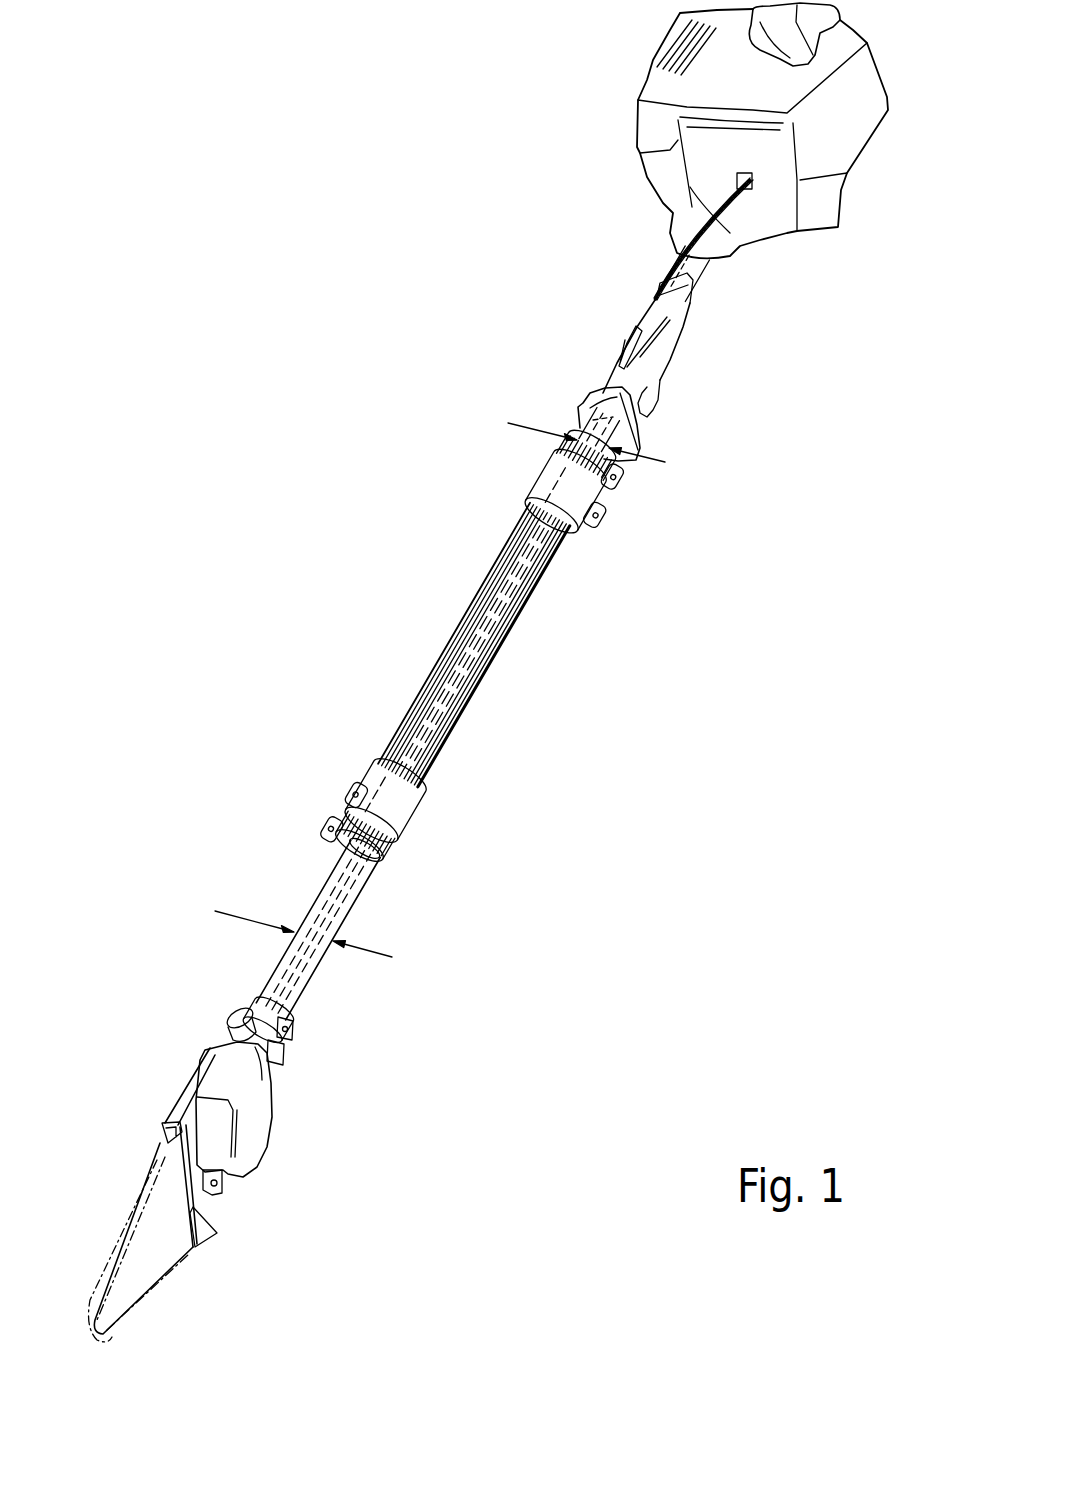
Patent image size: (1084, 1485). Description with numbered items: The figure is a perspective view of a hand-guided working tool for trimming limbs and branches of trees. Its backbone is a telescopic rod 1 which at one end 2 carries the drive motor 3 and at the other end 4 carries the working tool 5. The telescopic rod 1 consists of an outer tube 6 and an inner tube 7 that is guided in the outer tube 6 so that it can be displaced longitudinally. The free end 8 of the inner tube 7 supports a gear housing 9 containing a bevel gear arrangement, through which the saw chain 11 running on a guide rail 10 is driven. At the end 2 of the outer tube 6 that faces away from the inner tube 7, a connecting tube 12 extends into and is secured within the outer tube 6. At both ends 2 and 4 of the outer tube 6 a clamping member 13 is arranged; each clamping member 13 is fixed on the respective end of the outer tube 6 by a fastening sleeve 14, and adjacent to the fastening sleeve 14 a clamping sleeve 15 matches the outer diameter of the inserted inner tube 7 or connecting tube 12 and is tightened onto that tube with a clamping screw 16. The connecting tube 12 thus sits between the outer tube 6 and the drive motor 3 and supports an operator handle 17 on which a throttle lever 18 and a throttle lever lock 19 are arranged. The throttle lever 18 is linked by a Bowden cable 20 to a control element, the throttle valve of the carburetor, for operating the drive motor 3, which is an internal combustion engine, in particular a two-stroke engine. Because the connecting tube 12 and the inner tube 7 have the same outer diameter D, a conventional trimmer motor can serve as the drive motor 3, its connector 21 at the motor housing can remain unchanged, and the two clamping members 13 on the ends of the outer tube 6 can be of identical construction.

The telescopic rod 1 is at (360, 615).
The end of the telescopic rod 2 is at (492, 424).
The drive motor 3 is at (635, 110).
The end of the telescopic rod 4 is at (330, 808).
The working tool 5 is at (155, 1140).
The outer tube 6 is at (523, 604).
The inner tube 7 is at (327, 947).
The free end of the inner tube 8 is at (262, 1000).
The gear housing 9 is at (278, 1052).
The guide rail 10 is at (145, 1268).
The saw chain 11 is at (113, 1247).
The connecting tube 12 is at (587, 395).
The clamping member 13 is at (603, 530).
The fastening sleeve 14 is at (545, 480).
The clamping sleeve 15 is at (567, 447).
The clamping screw 16 is at (620, 497).
The operator handle 17 is at (665, 350).
The throttle lever 18 is at (650, 422).
The throttle lever lock 19 is at (626, 338).
The Bowden cable 20 is at (683, 239).
The connector 21 is at (718, 262).
The outer diameter D is at (518, 425).